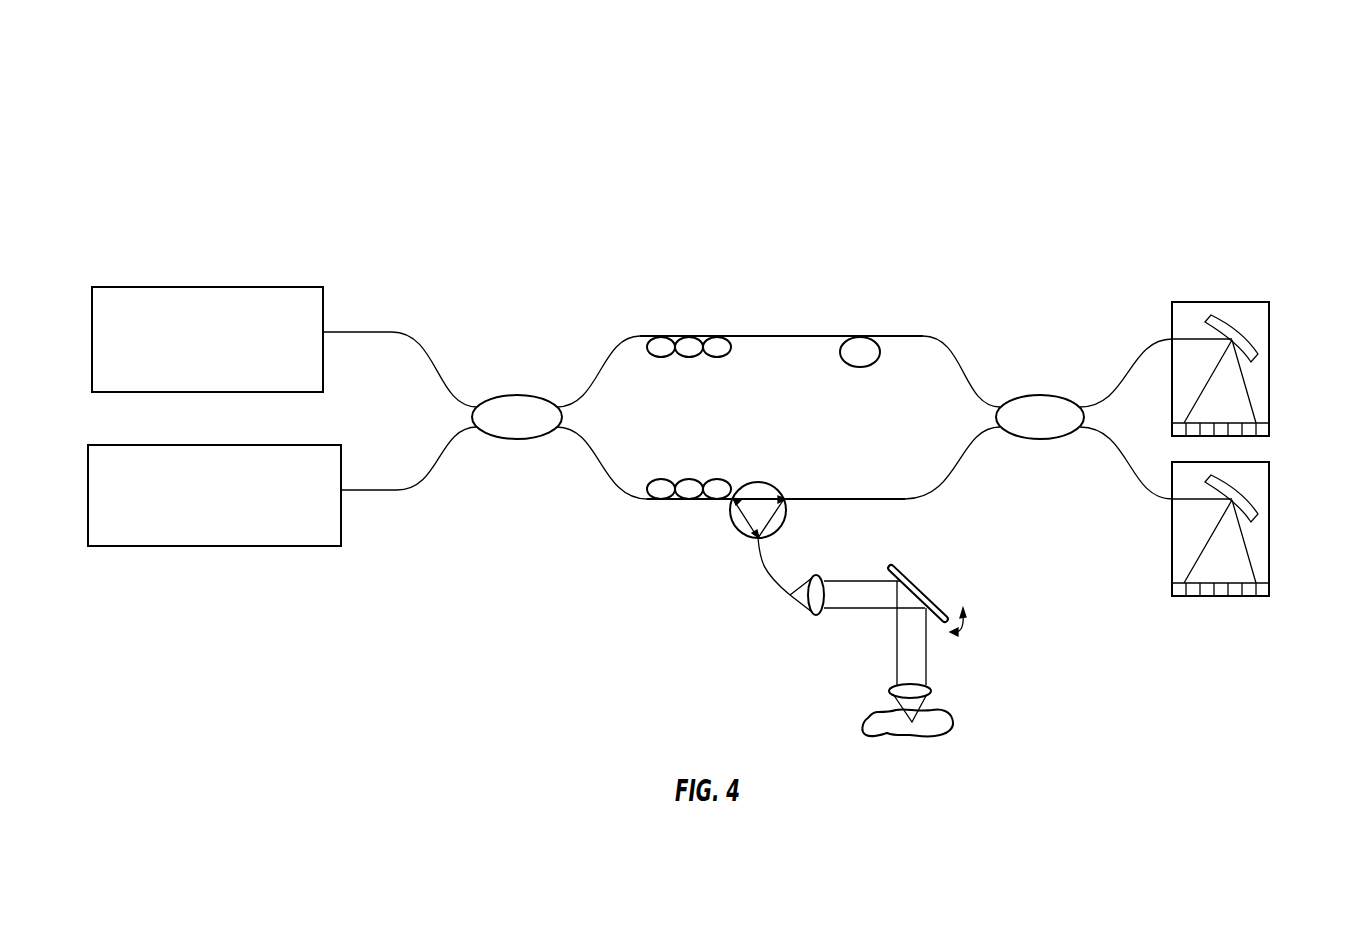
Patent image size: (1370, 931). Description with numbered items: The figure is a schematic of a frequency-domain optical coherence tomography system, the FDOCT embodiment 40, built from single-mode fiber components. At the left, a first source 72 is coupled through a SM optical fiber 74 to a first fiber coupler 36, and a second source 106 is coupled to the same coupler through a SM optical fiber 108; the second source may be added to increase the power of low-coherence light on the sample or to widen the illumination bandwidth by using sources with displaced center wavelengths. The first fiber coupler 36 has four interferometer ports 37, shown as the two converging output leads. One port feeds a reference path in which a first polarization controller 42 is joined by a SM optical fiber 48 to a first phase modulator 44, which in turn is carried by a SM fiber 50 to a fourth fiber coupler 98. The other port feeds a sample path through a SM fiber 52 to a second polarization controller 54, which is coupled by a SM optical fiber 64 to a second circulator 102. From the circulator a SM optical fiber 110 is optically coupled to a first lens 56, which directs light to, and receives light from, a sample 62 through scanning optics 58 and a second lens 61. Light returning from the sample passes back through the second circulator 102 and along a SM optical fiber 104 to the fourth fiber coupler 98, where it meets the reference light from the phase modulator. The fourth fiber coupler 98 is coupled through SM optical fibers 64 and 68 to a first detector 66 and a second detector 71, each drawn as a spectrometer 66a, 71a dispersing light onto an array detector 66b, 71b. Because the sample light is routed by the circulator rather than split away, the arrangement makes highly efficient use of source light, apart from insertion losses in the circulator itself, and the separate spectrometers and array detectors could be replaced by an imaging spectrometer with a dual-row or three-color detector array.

The FDOCT embodiment 40 is at (274, 66).
The first source 72 is at (172, 287).
The second source 106 is at (166, 546).
The SM optical fiber 74 is at (348, 332).
The SM optical fiber 108 is at (401, 490).
The first fiber coupler 36 is at (515, 395).
The interferometer ports 37 is at (560, 406).
The SM optical fiber 52 is at (590, 452).
The first polarization controller 42 is at (661, 337).
The SM optical fiber 48 is at (776, 336).
The first phase modulator 44 is at (860, 337).
The SM fiber 50 is at (933, 334).
The second polarization controller 54 is at (656, 503).
The SM optical fiber 104 is at (845, 499).
The SM optical fiber 64 is at (718, 505).
The second circulator 102 is at (752, 540).
The SM optical fiber 110 is at (767, 574).
The first lens 56 is at (816, 575).
The scanning optics 58 is at (905, 574).
The second lens 61 is at (927, 686).
The sample 62 is at (950, 712).
The fourth fiber coupler 98 is at (1017, 437).
The SM optical fiber 68 is at (1126, 370).
The second detector 71 is at (1228, 302).
The spectrometer 71a is at (1232, 335).
The array detector 71b is at (1172, 430).
The first detector 66 is at (1269, 478).
The spectrometer 66a is at (1240, 497).
The array detector 66b is at (1212, 596).